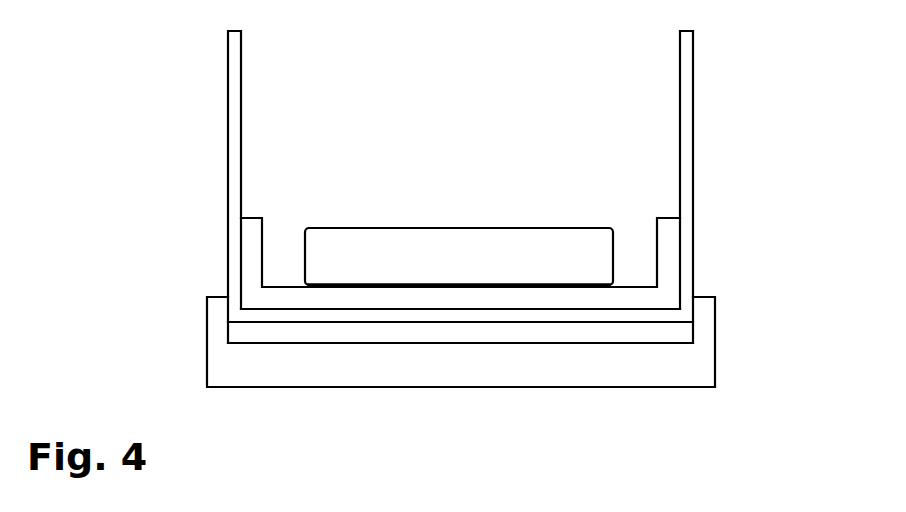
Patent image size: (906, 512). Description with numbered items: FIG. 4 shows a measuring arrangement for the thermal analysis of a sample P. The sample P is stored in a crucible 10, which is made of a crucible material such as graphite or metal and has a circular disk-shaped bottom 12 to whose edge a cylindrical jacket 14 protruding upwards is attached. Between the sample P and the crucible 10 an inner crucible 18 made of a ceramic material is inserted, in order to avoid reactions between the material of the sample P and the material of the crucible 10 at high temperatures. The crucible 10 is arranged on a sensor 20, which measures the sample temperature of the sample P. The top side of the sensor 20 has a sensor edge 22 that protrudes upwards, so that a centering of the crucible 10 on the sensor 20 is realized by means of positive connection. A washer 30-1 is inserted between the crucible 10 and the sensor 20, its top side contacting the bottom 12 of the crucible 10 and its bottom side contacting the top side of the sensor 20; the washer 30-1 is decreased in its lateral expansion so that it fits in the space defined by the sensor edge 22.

The crucible 10 is at (425, 187).
The bottom 12 is at (268, 314).
The cylindrical jacket 14 is at (233, 173).
The inner crucible 18 is at (270, 229).
The sample P is at (447, 219).
The sensor 20 is at (472, 312).
The sensor edge 22 is at (707, 325).
The washer 30-1 is at (680, 335).